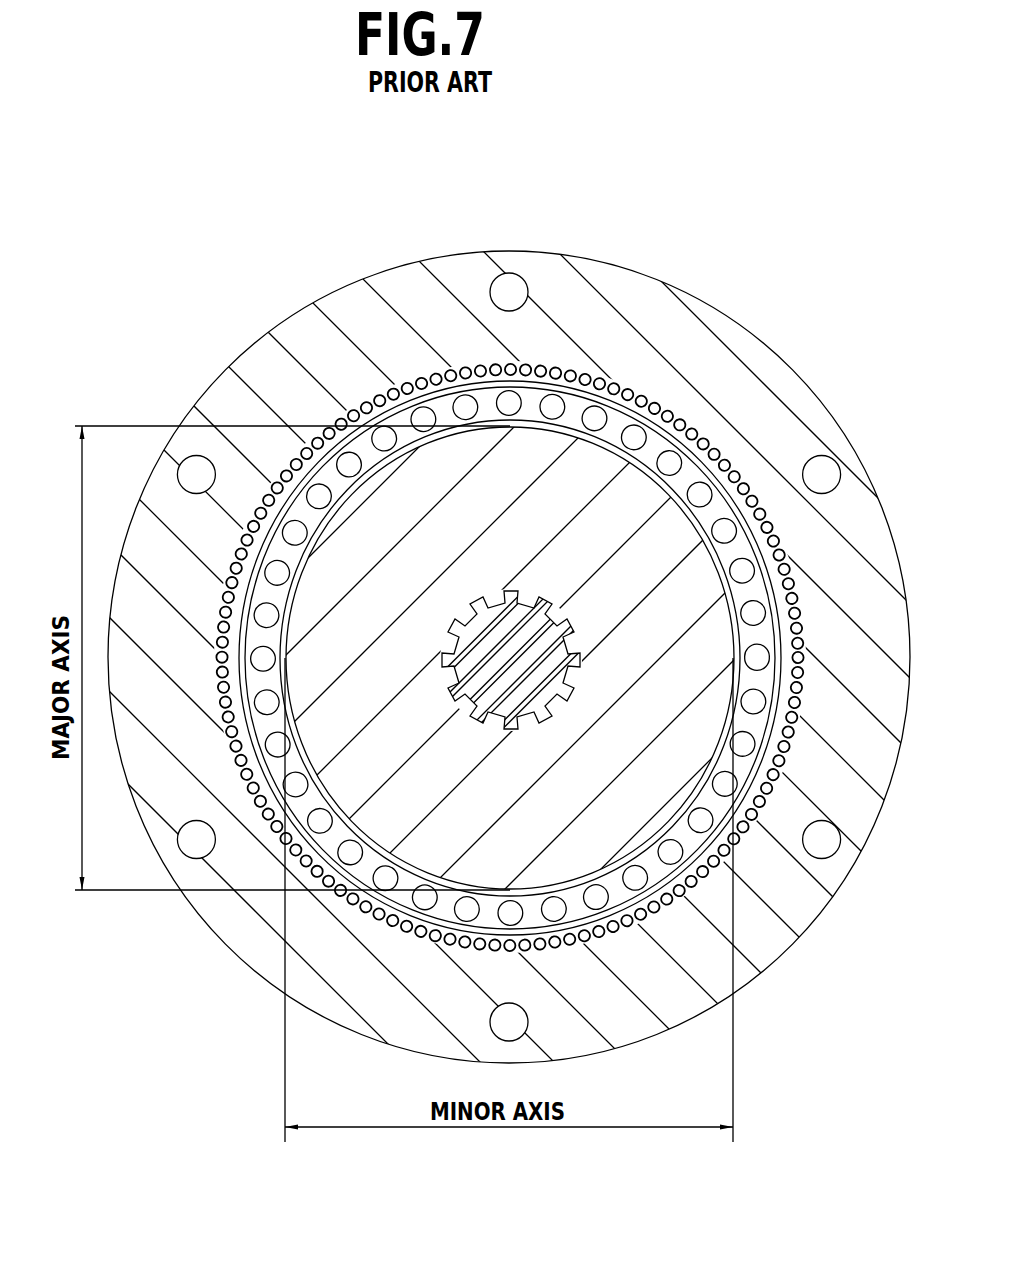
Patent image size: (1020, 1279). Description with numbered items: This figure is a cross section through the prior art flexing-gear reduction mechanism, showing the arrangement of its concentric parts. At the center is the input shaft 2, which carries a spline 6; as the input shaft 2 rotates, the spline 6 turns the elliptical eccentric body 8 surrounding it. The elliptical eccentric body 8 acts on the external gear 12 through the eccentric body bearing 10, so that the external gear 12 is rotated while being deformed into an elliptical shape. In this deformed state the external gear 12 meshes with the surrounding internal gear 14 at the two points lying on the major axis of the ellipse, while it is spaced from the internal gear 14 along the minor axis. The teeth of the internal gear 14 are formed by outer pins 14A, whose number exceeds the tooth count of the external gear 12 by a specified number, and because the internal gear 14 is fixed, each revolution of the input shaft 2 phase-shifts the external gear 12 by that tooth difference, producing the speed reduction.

The input shaft 2 is at (513, 644).
The spline 6 is at (586, 645).
The elliptical eccentric body 8 is at (637, 790).
The eccentric body bearing 10 is at (433, 387).
The external gear 12 is at (532, 582).
The internal gear 14 is at (720, 363).
The outer pins 14A is at (720, 452).